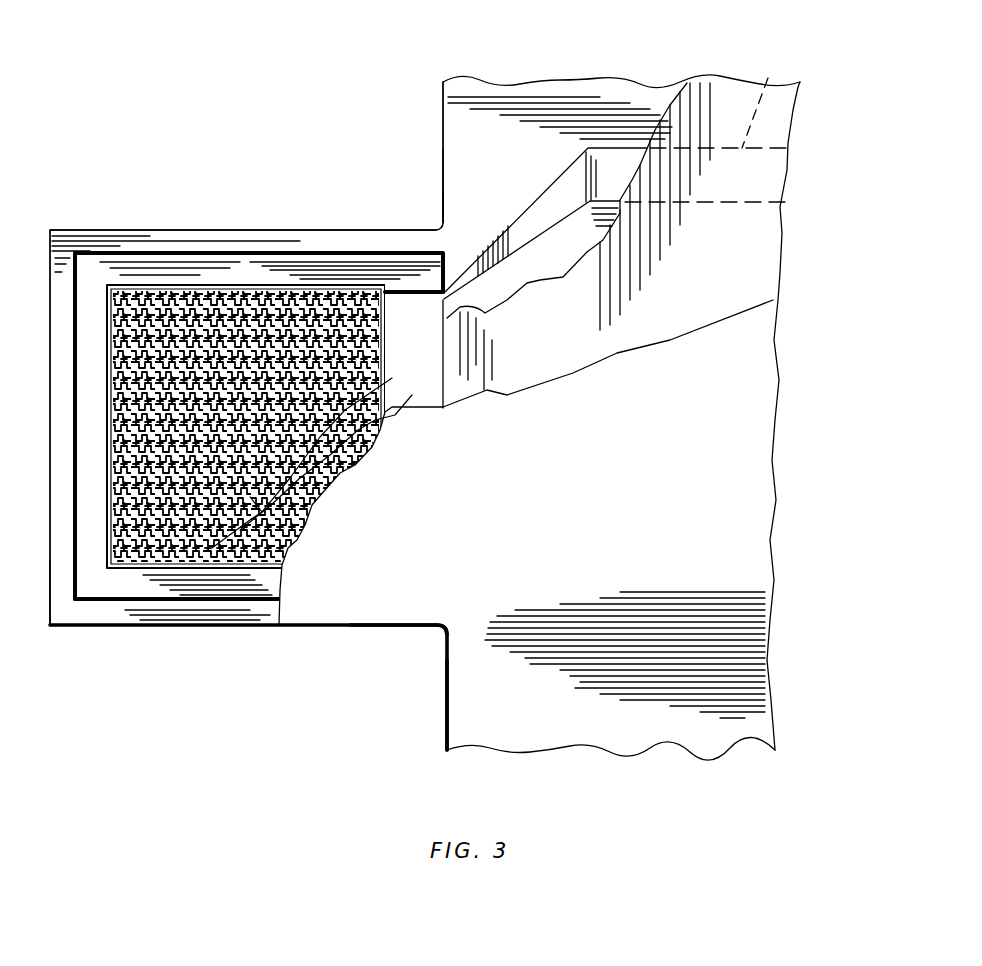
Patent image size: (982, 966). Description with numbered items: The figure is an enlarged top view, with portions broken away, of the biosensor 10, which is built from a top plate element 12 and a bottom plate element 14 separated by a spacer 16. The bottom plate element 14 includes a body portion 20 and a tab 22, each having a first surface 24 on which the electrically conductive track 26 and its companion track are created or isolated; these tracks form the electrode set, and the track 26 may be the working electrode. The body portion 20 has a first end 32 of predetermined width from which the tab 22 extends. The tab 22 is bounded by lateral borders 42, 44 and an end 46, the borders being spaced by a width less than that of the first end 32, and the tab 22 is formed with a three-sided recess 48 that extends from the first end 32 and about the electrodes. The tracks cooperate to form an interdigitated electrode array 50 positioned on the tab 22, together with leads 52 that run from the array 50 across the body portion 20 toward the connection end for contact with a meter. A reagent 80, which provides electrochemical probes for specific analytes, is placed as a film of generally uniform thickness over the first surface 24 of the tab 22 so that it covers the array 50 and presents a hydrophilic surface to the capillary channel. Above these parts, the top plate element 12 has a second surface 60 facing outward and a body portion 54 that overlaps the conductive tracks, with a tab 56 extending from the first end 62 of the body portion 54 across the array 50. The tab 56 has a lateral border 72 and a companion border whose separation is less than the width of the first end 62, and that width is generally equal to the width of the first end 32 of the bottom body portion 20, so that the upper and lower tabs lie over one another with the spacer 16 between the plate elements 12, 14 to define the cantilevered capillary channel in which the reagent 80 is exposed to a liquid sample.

The biosensor 10 is at (340, 136).
The top plate element 12 is at (386, 608).
The bottom plate element 14 is at (296, 224).
The spacer 16 is at (726, 112).
The body portion 20 is at (498, 82).
The tab 22 is at (197, 618).
The first surface 24 is at (458, 185).
The electrically conductive track 26 is at (553, 194).
The first end 32 is at (458, 212).
The lateral border 42 is at (97, 628).
The lateral border 44 is at (127, 228).
The end 46 is at (50, 590).
The recess 48 is at (100, 260).
The interdigitated electrode array 50 is at (175, 300).
The leads 52 is at (767, 101).
The body portion 54 is at (737, 467).
The tab 56 is at (295, 602).
The second surface 60 is at (558, 713).
The first end 62 is at (447, 707).
The lateral border 72 is at (392, 627).
The reagent 80 is at (250, 497).